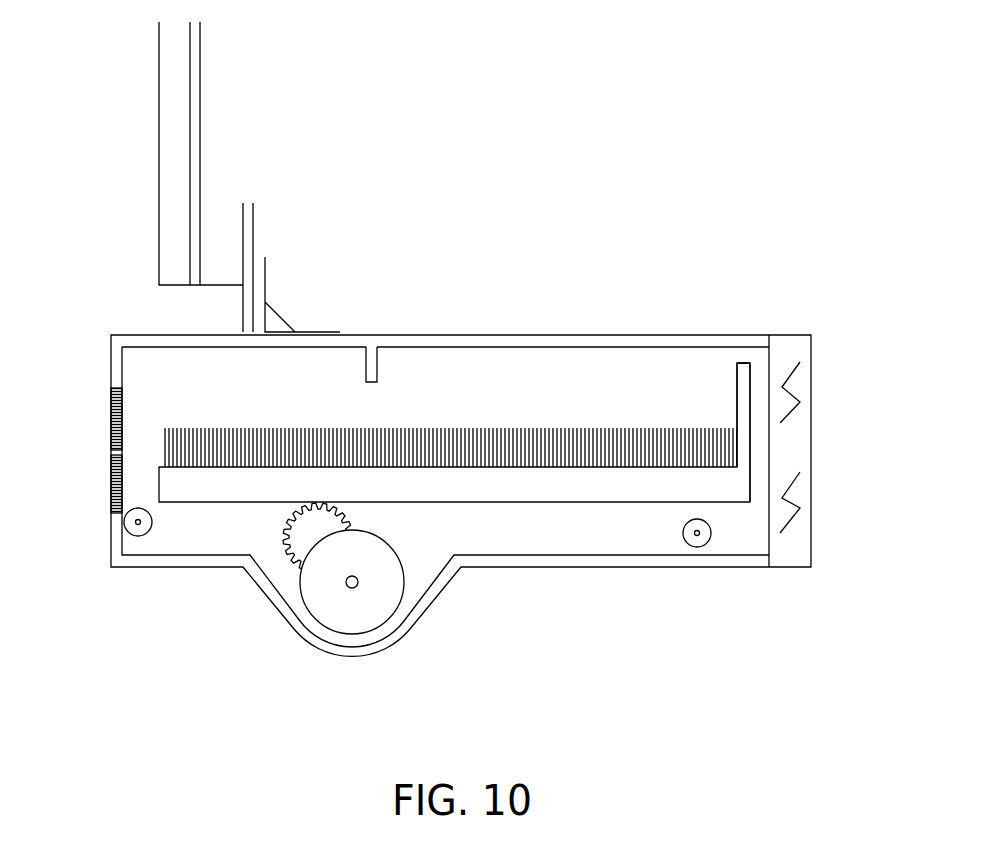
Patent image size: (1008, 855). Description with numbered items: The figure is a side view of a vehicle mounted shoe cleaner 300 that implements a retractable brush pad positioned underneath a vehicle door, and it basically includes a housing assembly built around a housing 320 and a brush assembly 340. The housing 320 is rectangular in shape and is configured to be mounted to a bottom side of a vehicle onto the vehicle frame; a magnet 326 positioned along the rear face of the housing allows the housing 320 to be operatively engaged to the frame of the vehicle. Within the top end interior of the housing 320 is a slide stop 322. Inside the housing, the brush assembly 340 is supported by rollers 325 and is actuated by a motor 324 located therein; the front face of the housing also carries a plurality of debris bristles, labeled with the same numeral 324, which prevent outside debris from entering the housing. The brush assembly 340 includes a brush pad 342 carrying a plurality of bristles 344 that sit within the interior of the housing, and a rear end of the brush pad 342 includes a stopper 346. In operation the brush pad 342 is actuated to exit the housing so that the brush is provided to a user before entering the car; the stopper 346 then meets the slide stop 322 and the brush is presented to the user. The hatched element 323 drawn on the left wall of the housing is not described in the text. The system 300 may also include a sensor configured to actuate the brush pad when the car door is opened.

The vehicle mounted shoe cleaner 300 is at (122, 180).
The housing 320 is at (135, 333).
The slide stop 322 is at (377, 347).
The seal 323 is at (111, 470).
The motor 324 is at (350, 618).
The rollers 325 is at (136, 536).
The magnet 326 is at (812, 529).
The brush assembly 340 is at (454, 397).
The brush pad 342 is at (522, 480).
The bristles 344 is at (452, 428).
The stopper 346 is at (740, 362).